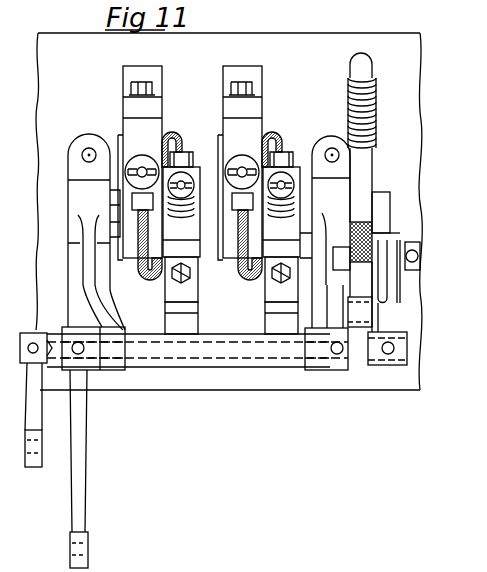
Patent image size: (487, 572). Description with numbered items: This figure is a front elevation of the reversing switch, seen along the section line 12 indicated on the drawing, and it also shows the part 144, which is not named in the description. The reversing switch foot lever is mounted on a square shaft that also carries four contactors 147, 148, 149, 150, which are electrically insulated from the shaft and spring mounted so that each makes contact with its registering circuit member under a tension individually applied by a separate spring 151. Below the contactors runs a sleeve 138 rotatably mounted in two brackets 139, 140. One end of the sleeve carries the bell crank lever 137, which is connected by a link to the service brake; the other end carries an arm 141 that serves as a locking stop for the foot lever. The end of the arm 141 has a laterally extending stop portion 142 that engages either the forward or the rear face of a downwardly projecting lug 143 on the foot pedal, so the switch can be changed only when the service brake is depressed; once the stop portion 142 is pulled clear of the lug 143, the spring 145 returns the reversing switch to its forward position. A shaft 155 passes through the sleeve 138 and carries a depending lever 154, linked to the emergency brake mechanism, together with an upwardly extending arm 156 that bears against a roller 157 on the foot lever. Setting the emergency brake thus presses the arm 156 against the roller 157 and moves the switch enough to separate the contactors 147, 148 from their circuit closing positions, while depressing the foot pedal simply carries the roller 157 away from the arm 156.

The section line 12- 12 is at (308, 2).
The bell crank lever 137 is at (85, 482).
The sleeve 138 is at (205, 362).
The bracket 139 is at (117, 370).
The bracket 140 is at (314, 372).
The arm 141 is at (388, 370).
The stop portion 142 is at (360, 310).
The lug 143 is at (377, 322).
The support arm 144 is at (420, 190).
The spring 145 is at (373, 82).
The contactor 147 is at (172, 58).
The contactor 148 is at (253, 75).
The contactor 149 is at (190, 290).
The contactor 150 is at (264, 296).
The spring 151 is at (207, 198).
The lever 154 is at (42, 432).
The shaft 155 is at (61, 365).
The arm 156 is at (405, 285).
The roller 157 is at (420, 250).